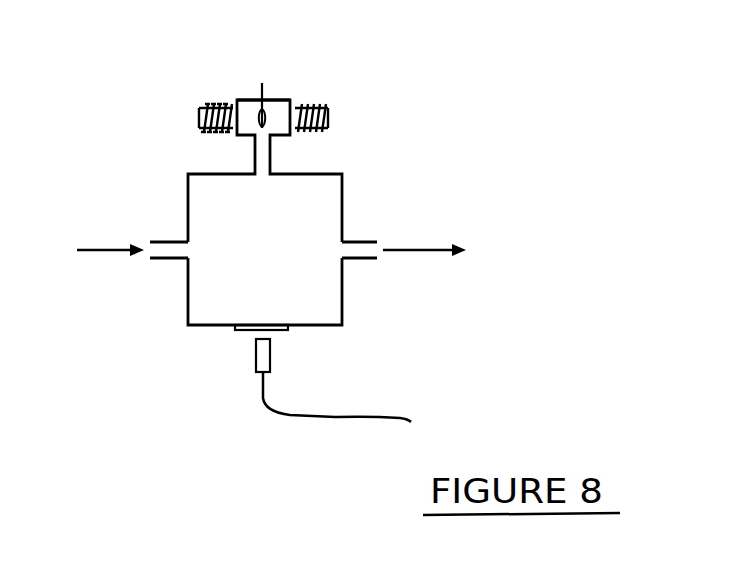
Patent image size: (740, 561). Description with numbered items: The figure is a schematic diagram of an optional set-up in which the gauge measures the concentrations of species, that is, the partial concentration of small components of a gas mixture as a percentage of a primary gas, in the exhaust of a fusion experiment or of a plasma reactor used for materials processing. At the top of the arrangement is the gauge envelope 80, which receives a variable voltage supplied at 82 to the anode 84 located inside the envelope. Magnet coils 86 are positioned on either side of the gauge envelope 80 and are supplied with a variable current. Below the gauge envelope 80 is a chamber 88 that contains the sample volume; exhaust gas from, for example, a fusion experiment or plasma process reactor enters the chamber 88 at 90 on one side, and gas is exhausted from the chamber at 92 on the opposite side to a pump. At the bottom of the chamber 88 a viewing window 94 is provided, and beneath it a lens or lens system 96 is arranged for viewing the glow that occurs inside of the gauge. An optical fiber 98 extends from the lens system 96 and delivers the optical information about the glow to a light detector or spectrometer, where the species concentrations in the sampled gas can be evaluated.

The gauge envelope 80 is at (232, 99).
The variable voltage supply 82 is at (266, 81).
The anode 84 is at (266, 114).
The magnet coils 86 is at (324, 100).
The chamber 88 is at (326, 202).
The gas inlet 90 is at (110, 232).
The gas exhaust 92 is at (424, 234).
The viewing window 94 is at (250, 336).
The lens system 96 is at (273, 352).
The optical fiber 98 is at (387, 412).